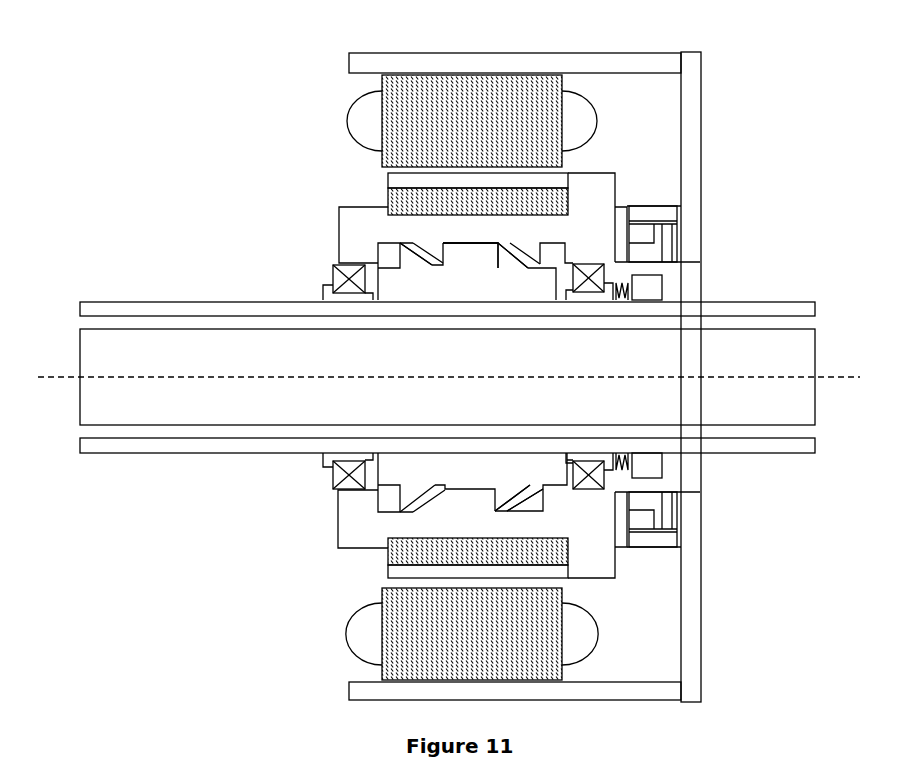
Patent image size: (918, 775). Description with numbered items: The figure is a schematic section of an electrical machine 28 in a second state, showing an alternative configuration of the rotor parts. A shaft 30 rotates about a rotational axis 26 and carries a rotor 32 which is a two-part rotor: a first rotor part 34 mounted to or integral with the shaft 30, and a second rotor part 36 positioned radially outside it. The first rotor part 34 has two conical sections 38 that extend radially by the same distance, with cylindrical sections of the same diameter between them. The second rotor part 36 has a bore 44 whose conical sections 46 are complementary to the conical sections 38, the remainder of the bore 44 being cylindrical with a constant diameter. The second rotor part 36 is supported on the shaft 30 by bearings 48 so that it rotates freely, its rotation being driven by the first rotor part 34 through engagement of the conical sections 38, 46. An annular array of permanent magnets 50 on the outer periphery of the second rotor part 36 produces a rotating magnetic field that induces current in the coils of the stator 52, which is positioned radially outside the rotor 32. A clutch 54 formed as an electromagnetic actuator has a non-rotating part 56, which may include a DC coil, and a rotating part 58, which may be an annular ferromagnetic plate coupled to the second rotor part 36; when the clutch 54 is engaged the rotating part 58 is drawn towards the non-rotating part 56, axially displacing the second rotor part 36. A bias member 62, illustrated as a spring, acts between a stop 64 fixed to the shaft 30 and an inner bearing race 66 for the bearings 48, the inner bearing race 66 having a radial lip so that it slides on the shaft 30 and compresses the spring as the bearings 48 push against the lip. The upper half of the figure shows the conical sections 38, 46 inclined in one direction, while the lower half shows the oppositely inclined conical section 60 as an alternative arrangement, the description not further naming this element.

The rotational axis 26 is at (803, 378).
The electrical machine 28 is at (126, 137).
The shaft 30 is at (158, 421).
The rotor 32 is at (312, 175).
The first rotor part 34 is at (496, 301).
The second rotor part 36 is at (523, 244).
The conical section 38 is at (416, 262).
The bore 44 is at (477, 252).
The conical section 46 is at (428, 251).
The bearings 48 is at (338, 479).
The permanent magnets 50 is at (410, 182).
The stator 52 is at (443, 130).
The clutch 54 is at (677, 567).
The non-rotating part 56 is at (689, 228).
The rotating part 58 is at (620, 207).
The cam surface 60 is at (523, 493).
The bias member 62 is at (624, 298).
The stop 64 is at (651, 297).
The inner bearing race 66 is at (590, 302).